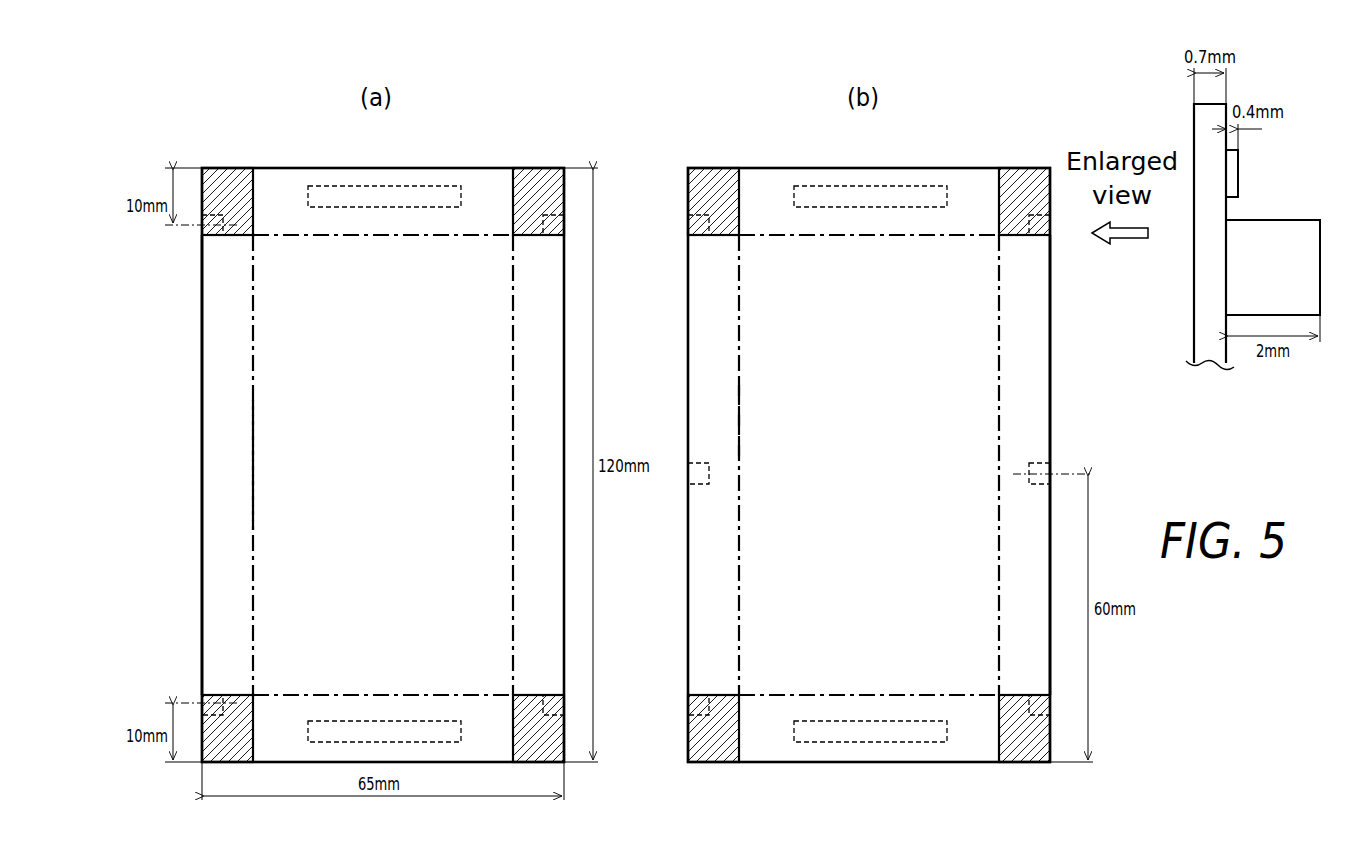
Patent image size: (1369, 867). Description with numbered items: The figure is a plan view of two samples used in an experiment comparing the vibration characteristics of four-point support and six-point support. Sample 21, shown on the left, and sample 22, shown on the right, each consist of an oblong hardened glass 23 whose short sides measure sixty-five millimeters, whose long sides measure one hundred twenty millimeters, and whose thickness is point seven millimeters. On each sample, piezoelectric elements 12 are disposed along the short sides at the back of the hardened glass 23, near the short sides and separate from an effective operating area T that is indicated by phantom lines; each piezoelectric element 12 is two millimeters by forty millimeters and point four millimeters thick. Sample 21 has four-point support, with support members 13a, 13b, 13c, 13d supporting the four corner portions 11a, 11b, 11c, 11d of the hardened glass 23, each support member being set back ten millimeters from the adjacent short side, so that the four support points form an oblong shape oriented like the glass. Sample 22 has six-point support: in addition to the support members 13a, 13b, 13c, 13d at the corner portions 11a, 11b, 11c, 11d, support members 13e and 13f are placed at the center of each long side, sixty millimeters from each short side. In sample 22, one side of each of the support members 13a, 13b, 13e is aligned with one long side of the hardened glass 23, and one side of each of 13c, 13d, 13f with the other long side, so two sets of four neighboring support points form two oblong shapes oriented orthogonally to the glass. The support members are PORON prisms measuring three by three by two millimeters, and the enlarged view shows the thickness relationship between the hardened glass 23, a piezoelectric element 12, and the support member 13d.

The corner portion 11a is at (228, 188).
The corner portion 11b is at (215, 748).
The corner portion 11c is at (544, 748).
The corner portion 11d is at (538, 188).
The piezoelectric element 12 is at (378, 207).
The support member 13a is at (216, 228).
The support member 13b is at (216, 704).
The support member 13c is at (552, 704).
The support member 13d is at (551, 228).
The support member 13e is at (704, 476).
The support member 13f is at (1032, 476).
The sample 21 is at (199, 346).
The sample 22 is at (1062, 437).
The hardened glass 23 is at (240, 415).
The effective operating area T is at (255, 518).